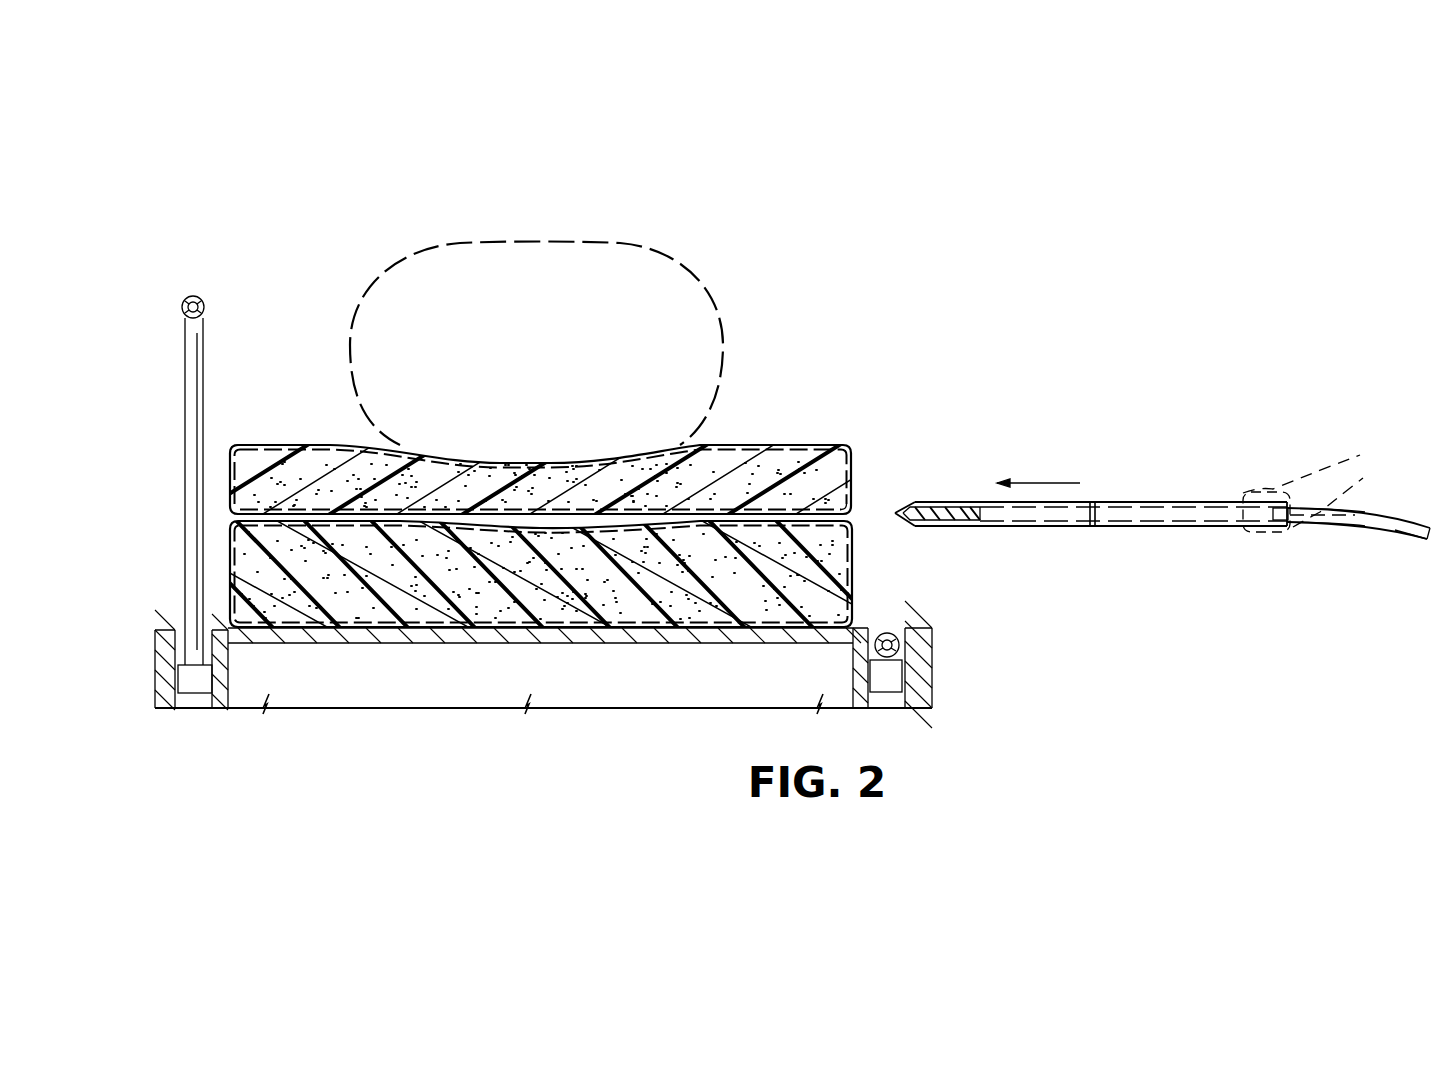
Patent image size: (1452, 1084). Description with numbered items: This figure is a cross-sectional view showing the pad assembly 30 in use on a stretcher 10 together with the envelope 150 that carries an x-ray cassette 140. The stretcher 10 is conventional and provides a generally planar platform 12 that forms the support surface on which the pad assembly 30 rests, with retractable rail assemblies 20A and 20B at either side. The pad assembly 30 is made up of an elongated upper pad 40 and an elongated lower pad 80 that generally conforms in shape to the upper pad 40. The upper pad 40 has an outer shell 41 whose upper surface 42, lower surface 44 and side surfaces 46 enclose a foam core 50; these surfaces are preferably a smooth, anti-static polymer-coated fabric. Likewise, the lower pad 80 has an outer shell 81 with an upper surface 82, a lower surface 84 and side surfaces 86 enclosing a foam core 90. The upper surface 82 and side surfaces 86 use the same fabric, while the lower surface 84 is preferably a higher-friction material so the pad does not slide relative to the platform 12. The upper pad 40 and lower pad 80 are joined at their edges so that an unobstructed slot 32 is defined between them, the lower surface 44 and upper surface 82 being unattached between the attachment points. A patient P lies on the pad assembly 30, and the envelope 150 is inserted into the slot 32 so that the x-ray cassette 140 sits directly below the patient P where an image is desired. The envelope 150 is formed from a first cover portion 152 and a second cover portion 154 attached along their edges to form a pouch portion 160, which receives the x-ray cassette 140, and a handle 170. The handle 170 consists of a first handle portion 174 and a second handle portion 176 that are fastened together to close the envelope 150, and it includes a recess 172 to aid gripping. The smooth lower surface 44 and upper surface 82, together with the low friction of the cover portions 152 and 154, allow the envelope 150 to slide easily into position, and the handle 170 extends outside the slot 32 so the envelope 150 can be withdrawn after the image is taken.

The patient P is at (712, 301).
The stretcher 10 is at (935, 652).
The platform 12 is at (576, 636).
The retractable rail assembly 20A is at (190, 297).
The retractable rail assembly 20B is at (900, 632).
The pad assembly 30 is at (265, 430).
The slot 32 is at (850, 515).
The upper pad 40 is at (228, 447).
The outer shell 41 is at (850, 468).
The upper surface 42 is at (765, 442).
The lower surface 44 is at (852, 535).
The side surfaces 46 is at (228, 475).
The foam core 50 is at (313, 460).
The lower pad 80 is at (228, 548).
The outer shell 81 is at (852, 582).
The upper surface 82 is at (712, 516).
The lower surface 84 is at (671, 630).
The side surfaces 86 is at (228, 578).
The foam core 90 is at (433, 587).
The x-ray cassette 140 is at (953, 510).
The envelope 150 is at (1133, 490).
The first cover portion 152 is at (1188, 500).
The second cover portion 154 is at (1170, 523).
The pouch portion 160 is at (1097, 497).
The handle 170 is at (1398, 507).
The recess 172 is at (1381, 530).
The first handle portion 174 is at (1371, 508).
The second handle portion 176 is at (1394, 535).